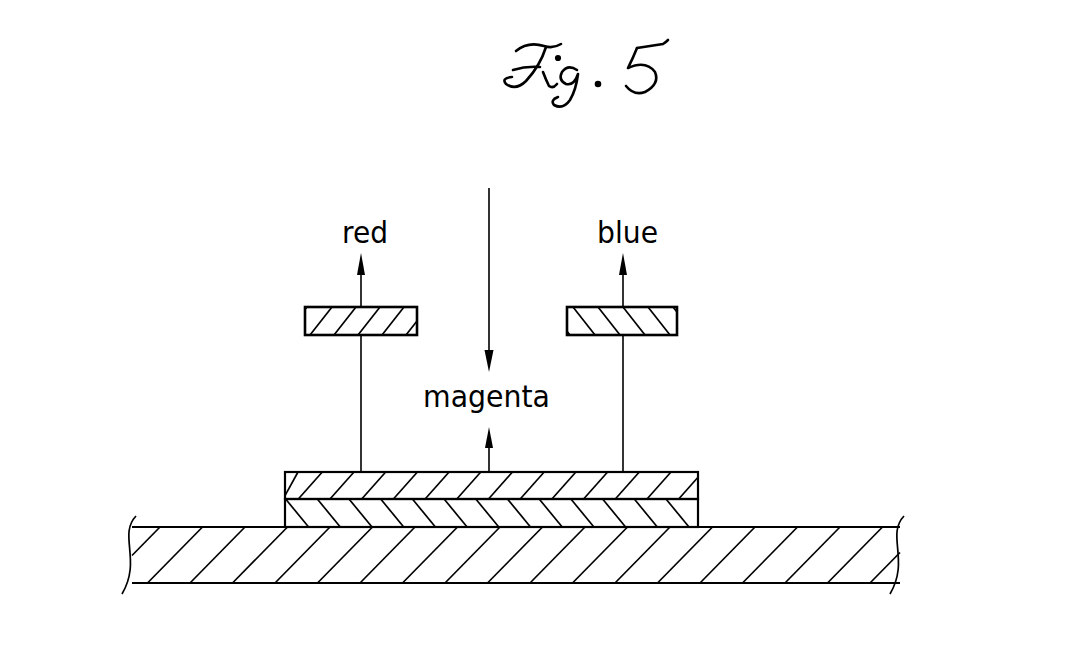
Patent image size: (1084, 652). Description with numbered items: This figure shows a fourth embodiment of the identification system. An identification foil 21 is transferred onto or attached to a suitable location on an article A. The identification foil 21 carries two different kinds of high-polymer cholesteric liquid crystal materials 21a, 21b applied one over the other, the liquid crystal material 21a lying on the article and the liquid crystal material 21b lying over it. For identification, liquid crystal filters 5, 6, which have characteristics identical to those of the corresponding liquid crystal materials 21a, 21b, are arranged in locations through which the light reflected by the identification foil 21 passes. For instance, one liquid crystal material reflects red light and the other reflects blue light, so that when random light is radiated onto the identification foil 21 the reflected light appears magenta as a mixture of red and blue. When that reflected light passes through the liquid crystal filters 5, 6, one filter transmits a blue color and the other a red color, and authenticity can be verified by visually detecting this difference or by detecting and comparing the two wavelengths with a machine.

The liquid crystal filter 5 is at (661, 313).
The liquid crystal filter 6 is at (321, 313).
The identification foil 21 is at (588, 481).
The high-polymer cholesteric liquid crystal material 21a is at (699, 526).
The high-polymer cholesteric liquid crystal material 21b is at (699, 473).
The article A is at (226, 536).